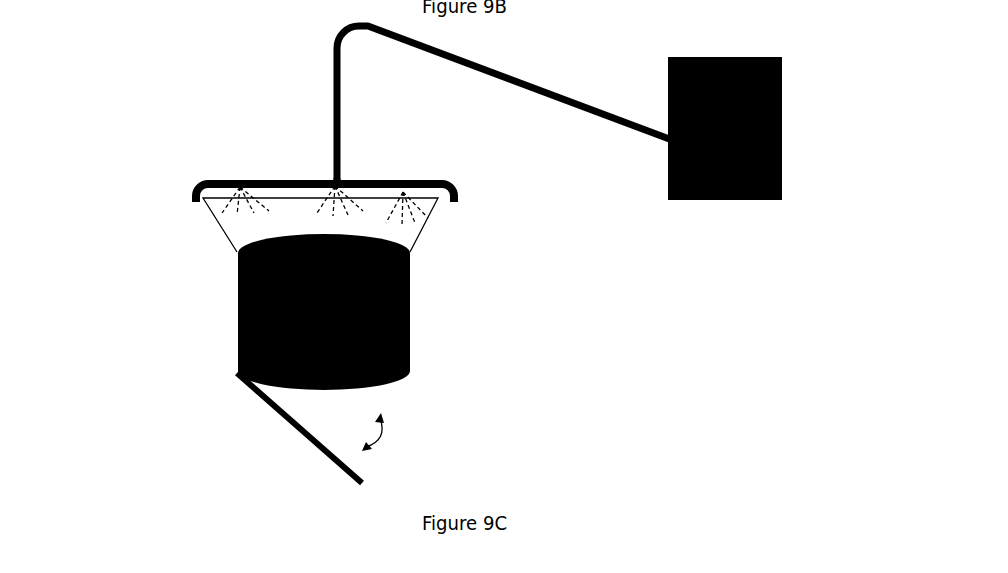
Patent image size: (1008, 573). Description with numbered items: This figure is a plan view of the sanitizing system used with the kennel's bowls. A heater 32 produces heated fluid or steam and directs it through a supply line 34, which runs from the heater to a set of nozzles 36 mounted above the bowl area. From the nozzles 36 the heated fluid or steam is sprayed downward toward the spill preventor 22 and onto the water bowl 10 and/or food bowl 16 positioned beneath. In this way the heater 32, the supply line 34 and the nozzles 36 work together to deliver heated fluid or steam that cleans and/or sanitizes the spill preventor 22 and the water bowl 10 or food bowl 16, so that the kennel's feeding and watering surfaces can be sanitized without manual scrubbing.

The water bowl 10 is at (232, 358).
The food bowl 16 is at (240, 332).
The spill preventor 22 is at (217, 228).
The heater 32 is at (783, 97).
The supply line 34 is at (538, 85).
The nozzles 36 is at (227, 160).